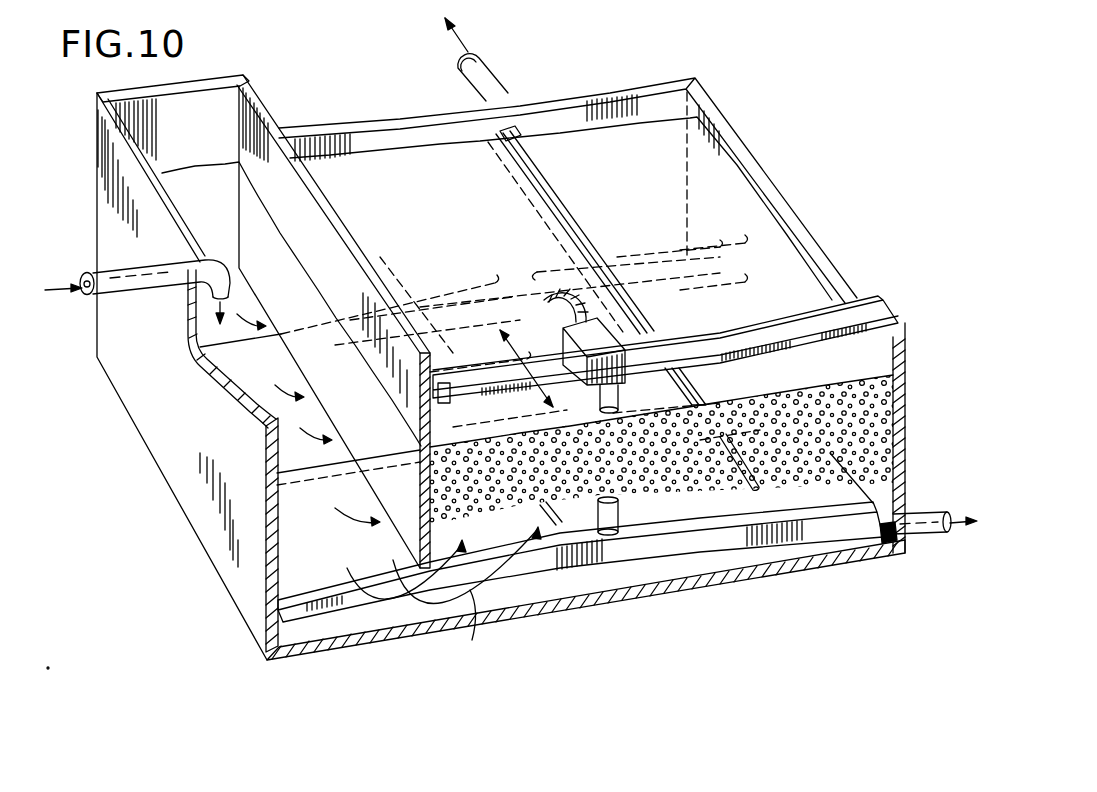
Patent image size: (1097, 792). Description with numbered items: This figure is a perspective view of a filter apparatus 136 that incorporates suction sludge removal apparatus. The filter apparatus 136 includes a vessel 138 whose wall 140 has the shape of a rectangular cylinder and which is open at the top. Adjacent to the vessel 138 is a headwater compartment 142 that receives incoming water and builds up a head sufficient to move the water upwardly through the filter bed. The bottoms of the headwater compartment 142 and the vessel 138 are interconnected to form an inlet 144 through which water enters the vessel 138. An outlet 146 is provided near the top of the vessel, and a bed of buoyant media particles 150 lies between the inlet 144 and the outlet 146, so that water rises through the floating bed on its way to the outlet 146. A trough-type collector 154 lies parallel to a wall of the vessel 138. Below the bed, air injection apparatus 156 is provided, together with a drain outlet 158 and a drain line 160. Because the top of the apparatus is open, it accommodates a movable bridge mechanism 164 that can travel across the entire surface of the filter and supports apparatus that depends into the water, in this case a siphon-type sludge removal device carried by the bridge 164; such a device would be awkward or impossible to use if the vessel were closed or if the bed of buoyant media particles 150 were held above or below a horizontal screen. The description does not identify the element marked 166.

The filter apparatus 136 is at (374, 92).
The vessel 138 is at (735, 122).
The wall 140 is at (578, 100).
The headwater compartment 142 is at (232, 362).
The inlet 144 is at (430, 597).
The outlet 146 is at (505, 132).
The bed of buoyant media particles 150 is at (867, 422).
The trough-type collector 154 is at (562, 188).
The air injection apparatus 156 is at (703, 475).
The drain outlet 158 is at (878, 543).
The drain line 160 is at (928, 511).
The movable bridge mechanism 164 is at (872, 300).
The bottom rail 166 is at (618, 553).